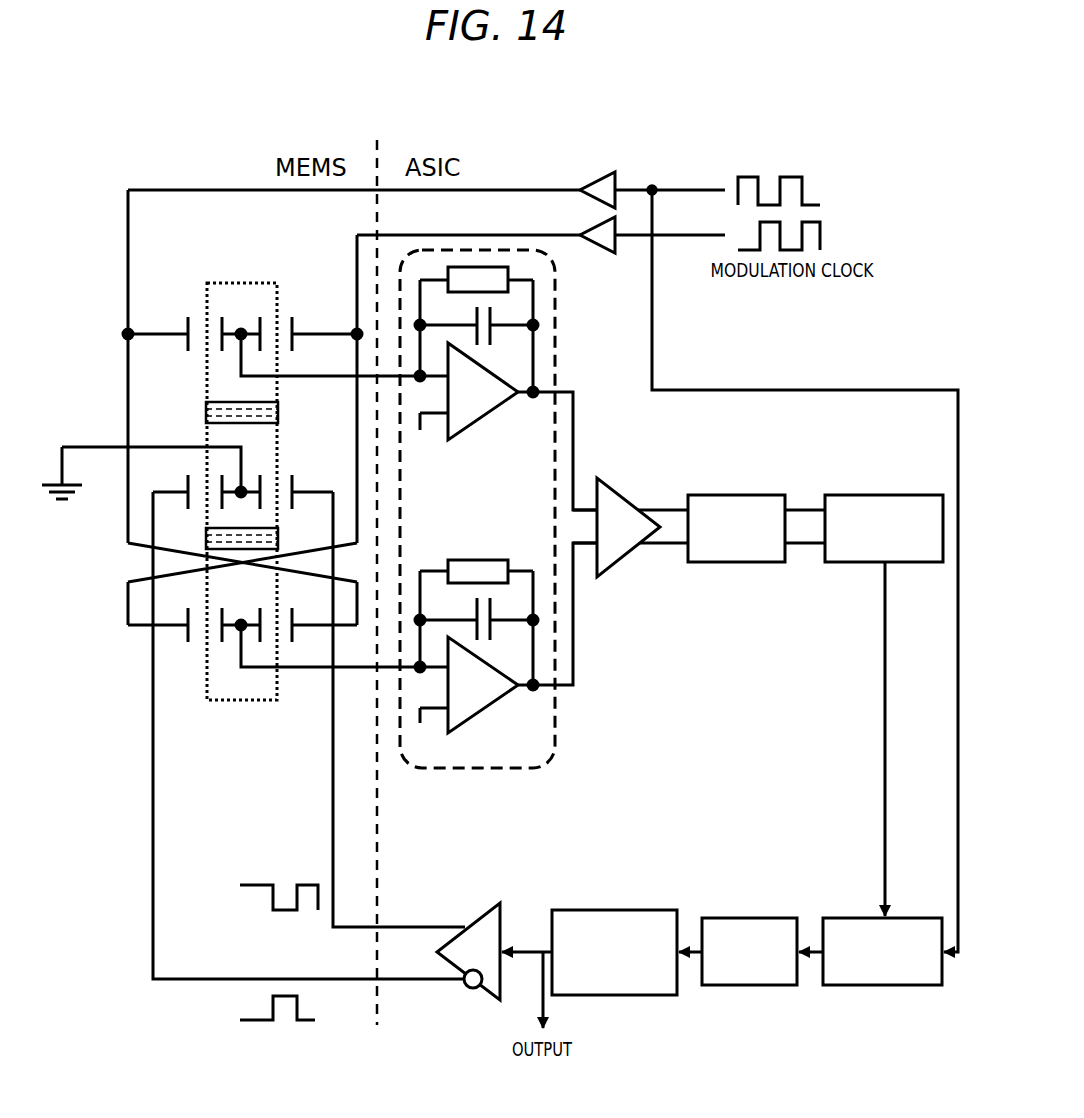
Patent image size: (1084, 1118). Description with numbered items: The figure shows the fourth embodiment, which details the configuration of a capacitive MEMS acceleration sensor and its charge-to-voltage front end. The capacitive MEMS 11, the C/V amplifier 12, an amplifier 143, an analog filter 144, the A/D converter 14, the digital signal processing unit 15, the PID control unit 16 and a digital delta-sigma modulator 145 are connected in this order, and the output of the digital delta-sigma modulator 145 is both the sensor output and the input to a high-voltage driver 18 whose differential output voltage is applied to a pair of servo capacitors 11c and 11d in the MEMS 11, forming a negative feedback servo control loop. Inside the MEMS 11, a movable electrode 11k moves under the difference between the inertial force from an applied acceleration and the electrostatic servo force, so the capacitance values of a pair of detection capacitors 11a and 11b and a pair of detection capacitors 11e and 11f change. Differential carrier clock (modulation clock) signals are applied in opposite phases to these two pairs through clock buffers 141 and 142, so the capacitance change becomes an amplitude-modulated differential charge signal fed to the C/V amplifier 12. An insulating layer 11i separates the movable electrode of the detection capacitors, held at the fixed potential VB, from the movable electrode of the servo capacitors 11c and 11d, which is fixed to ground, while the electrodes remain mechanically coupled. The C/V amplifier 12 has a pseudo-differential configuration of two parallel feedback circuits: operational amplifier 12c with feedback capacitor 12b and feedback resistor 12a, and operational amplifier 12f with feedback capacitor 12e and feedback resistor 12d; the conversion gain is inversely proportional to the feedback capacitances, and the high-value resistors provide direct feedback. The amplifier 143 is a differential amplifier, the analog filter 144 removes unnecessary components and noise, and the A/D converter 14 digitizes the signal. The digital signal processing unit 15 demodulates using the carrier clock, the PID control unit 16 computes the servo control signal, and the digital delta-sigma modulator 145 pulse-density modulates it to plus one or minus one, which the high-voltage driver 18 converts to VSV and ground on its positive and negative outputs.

The MEMS 11 is at (270, 165).
The detection capacitor 11a is at (200, 328).
The detection capacitor 11b is at (283, 328).
The servo capacitor 11c is at (200, 487).
The servo capacitor 11d is at (285, 487).
The detection capacitor 11e is at (200, 632).
The detection capacitor 11f is at (285, 634).
The insulating layer 11i is at (206, 410).
The movable electrode 11k is at (243, 283).
The C/V amplifier 12 is at (472, 250).
The feedback resistor 12a is at (510, 285).
The feedback capacitor 12b is at (492, 335).
The operational amplifier 12c is at (495, 412).
The feedback resistor 12d is at (478, 560).
The feedback capacitor 12e is at (492, 625).
The operational amplifier 12f is at (495, 705).
The A/D converter 14 is at (885, 495).
The clock buffer 141 is at (593, 178).
The clock buffer 142 is at (592, 255).
The amplifier 143 is at (625, 495).
The analog filter 144 is at (738, 495).
The digital delta-sigma modulator 145 is at (632, 910).
The digital signal processing unit 15 is at (875, 918).
The PID control unit 16 is at (740, 918).
The high-voltage driver 18 is at (487, 905).